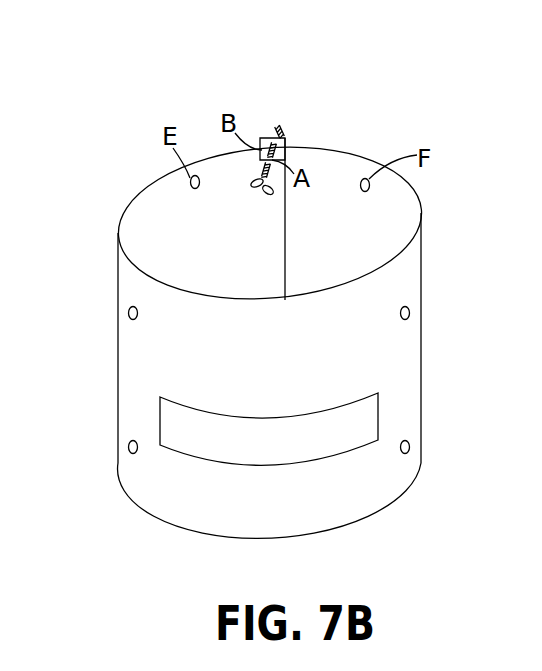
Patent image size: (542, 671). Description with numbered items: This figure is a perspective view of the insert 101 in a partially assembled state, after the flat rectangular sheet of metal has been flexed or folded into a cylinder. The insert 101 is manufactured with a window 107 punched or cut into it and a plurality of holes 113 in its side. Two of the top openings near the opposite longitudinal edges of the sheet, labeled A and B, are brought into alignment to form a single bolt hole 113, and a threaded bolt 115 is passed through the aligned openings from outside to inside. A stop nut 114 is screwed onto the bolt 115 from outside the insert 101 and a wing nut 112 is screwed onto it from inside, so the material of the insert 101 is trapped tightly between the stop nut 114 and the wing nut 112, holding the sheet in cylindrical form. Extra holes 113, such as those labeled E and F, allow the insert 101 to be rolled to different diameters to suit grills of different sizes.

The insert 101 is at (421, 285).
The window 107 is at (282, 458).
The wing nut 112 is at (257, 190).
The hole 113 is at (285, 141).
The stop nut 114 is at (283, 136).
The threaded bolt 115 is at (278, 127).